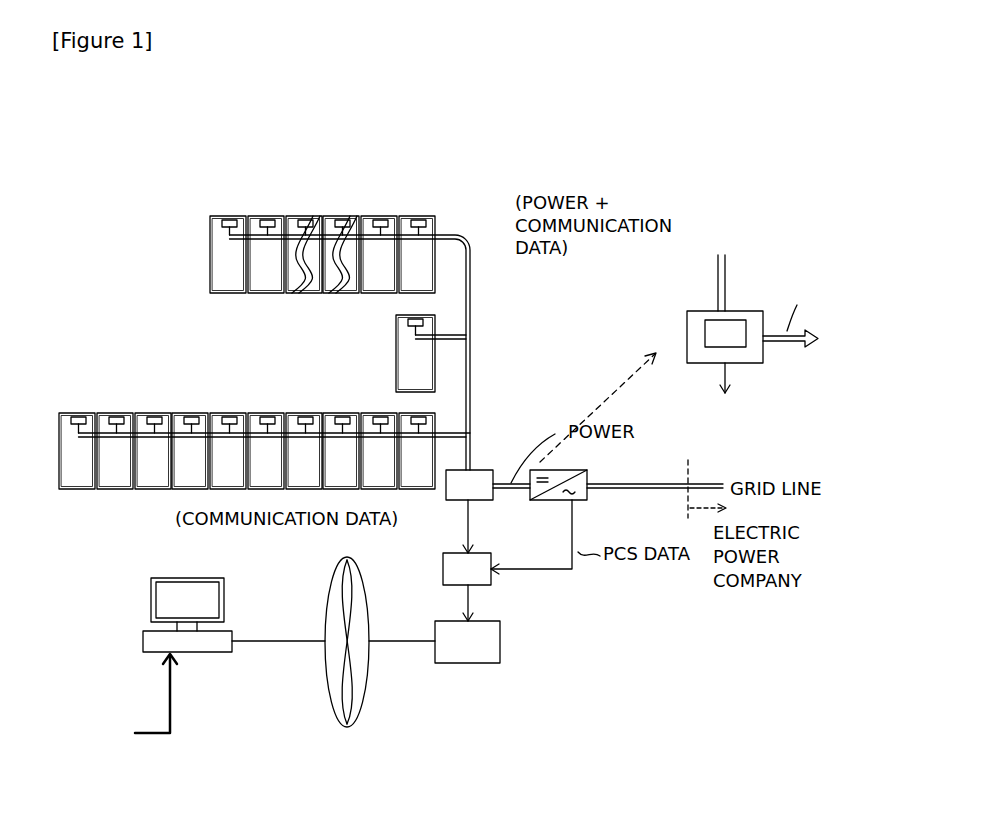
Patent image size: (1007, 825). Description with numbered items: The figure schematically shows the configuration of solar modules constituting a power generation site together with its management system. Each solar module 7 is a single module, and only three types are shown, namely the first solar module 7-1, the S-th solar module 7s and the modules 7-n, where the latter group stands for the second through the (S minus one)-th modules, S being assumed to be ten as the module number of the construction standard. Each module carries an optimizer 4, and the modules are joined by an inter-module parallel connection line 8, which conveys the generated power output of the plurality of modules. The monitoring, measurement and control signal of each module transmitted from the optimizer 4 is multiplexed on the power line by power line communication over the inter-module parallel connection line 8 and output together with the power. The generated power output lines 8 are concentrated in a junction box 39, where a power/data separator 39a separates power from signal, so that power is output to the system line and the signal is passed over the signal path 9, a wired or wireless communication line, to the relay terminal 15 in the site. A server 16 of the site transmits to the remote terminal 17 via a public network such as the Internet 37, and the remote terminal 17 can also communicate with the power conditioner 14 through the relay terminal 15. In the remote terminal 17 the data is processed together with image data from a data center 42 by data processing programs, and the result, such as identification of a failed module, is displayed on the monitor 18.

The solar module 7 is at (428, 222).
The solar module 7-n is at (258, 184).
The solar module 7-1 is at (385, 338).
The solar module 7s is at (201, 381).
The inter-module parallel connection line 8 is at (275, 228).
The optimizer 4 is at (340, 222).
The junction box 39 is at (480, 470).
The power/data separator 39a is at (741, 320).
The signal path 9 is at (465, 521).
The power conditioner 14 is at (557, 503).
The relay terminal 15 is at (478, 552).
The server 16 is at (501, 641).
The remote terminal 17 is at (143, 641).
The monitor 18 is at (158, 600).
The Internet 37 is at (366, 705).
The data center 42 is at (142, 699).